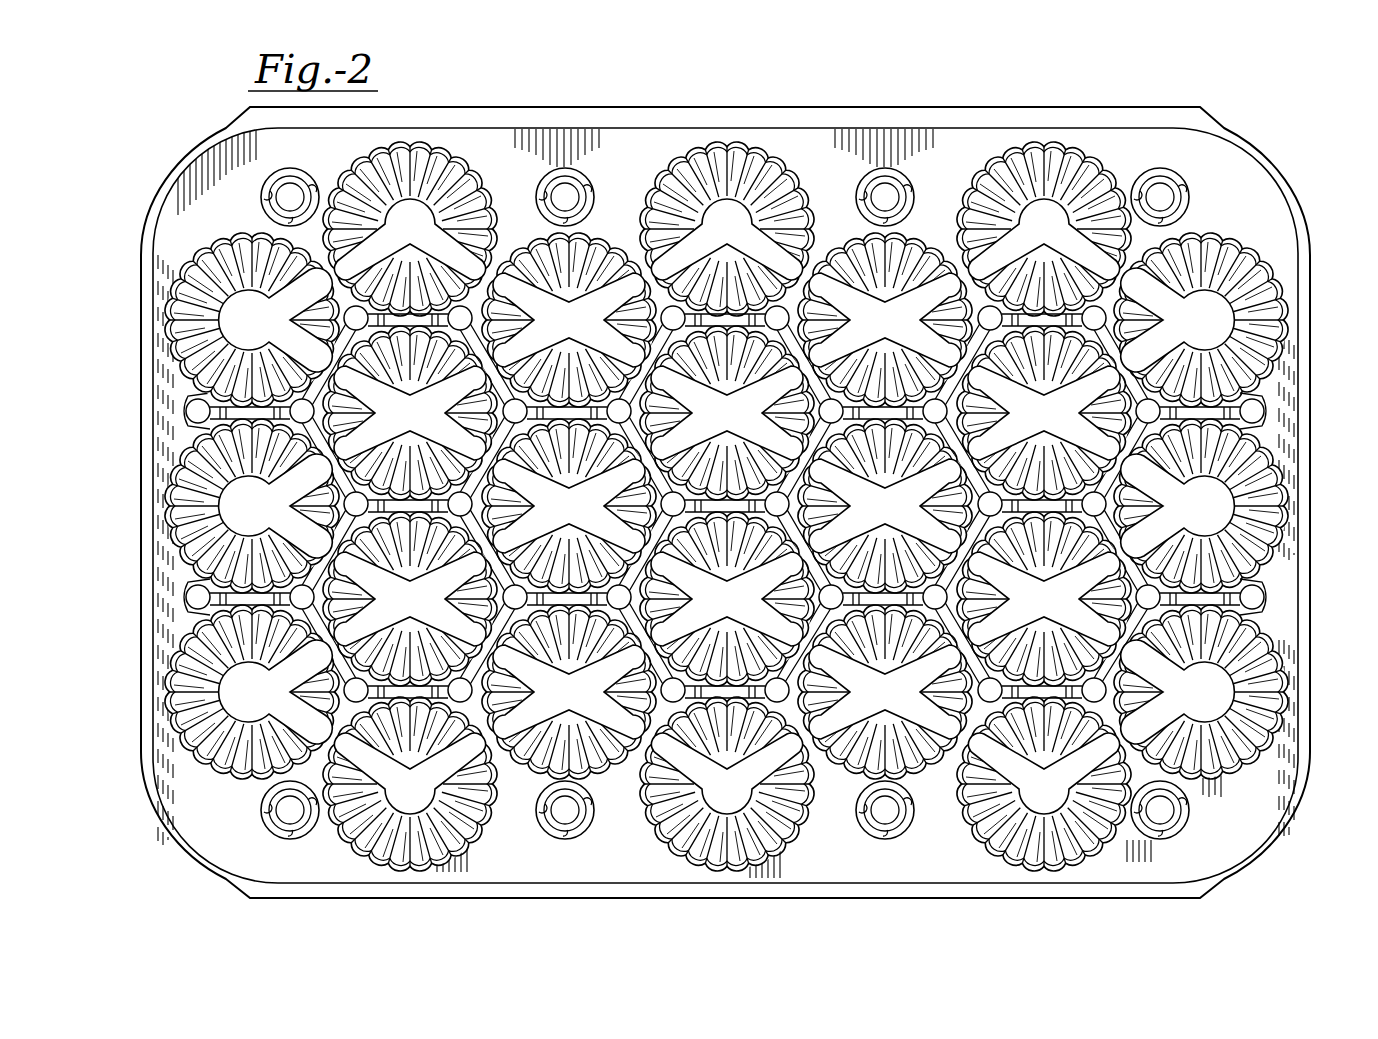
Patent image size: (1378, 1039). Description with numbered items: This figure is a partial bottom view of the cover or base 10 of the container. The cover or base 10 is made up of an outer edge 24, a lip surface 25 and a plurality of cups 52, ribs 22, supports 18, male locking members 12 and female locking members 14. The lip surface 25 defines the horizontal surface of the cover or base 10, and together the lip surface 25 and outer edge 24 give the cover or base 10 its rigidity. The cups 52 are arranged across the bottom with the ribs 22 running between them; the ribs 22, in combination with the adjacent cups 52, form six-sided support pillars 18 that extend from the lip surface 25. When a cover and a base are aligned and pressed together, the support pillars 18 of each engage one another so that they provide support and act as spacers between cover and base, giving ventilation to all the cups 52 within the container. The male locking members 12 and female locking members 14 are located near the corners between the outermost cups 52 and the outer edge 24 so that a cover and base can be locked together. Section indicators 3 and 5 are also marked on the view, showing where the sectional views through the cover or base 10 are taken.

The cover or base 10 is at (759, 486).
The male locking member 12 is at (298, 172).
The female locking member 14 is at (1163, 166).
The support pillar 18 is at (483, 297).
The rib 22 is at (182, 585).
The outer edge 24 is at (1185, 887).
The lip surface 25 is at (846, 862).
The cup 52 is at (172, 698).
The section line 3- 3 is at (88, 908).
The section line 5- 5 is at (1103, 805).